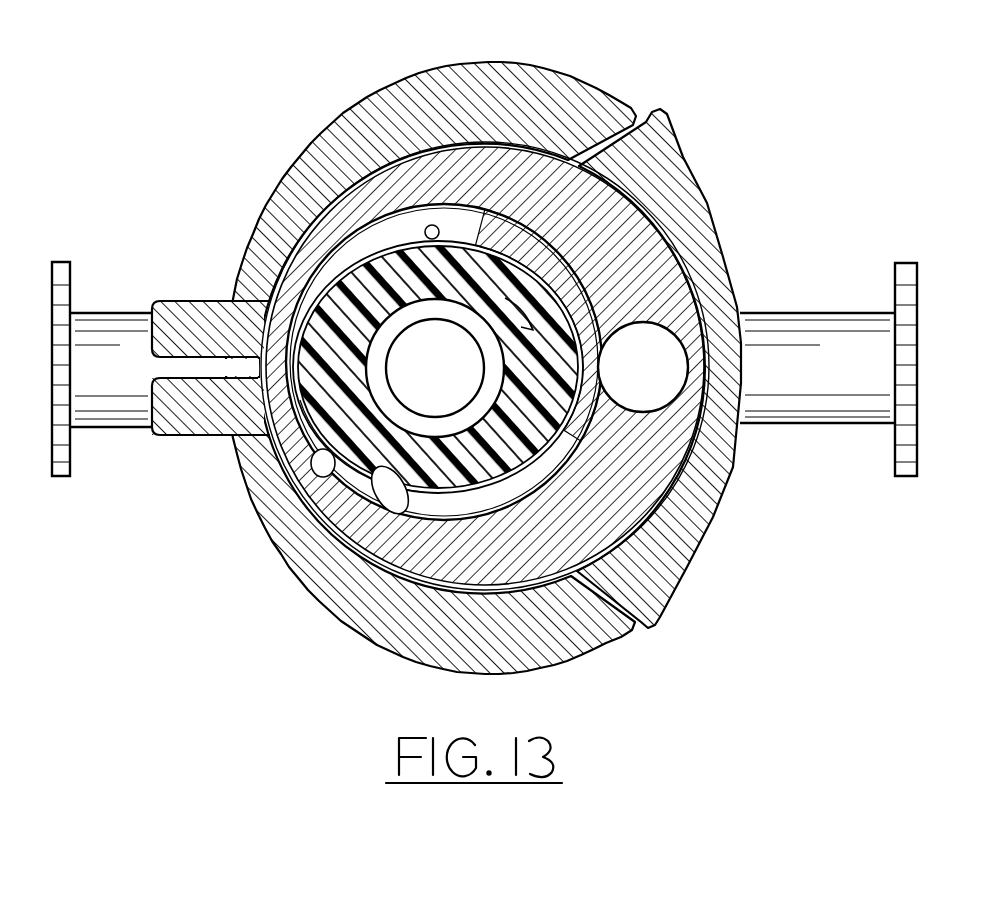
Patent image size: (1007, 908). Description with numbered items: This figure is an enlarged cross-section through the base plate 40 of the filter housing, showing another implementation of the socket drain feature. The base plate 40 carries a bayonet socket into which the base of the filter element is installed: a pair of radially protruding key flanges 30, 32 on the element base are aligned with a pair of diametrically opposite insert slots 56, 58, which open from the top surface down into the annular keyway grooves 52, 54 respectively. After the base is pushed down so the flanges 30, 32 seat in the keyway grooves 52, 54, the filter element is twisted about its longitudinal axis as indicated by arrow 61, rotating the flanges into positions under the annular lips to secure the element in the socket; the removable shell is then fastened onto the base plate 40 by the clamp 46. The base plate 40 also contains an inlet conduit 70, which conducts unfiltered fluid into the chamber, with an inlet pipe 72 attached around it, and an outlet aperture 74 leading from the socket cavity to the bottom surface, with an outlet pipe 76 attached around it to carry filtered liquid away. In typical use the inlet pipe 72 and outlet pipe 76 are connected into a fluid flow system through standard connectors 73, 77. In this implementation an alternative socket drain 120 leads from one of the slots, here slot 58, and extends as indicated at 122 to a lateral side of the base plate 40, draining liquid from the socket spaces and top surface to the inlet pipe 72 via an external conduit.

The key flange 30 is at (305, 448).
The key flange 32 is at (545, 300).
The base plate 40 is at (650, 209).
The clamp 46 is at (600, 75).
The keyway groove 52 is at (320, 500).
The keyway groove 54 is at (495, 232).
The insert slot 56 is at (450, 402).
The insert slot 58 is at (306, 186).
The arrow 61 is at (572, 288).
The inlet conduit 70 is at (718, 436).
The inlet pipe 72 is at (818, 312).
The connector 73 is at (912, 262).
The outlet aperture 74 is at (392, 490).
The outlet pipe 76 is at (140, 312).
The connector 77 is at (52, 262).
The socket drain 120 is at (385, 221).
The socket drain extension 122 is at (433, 226).